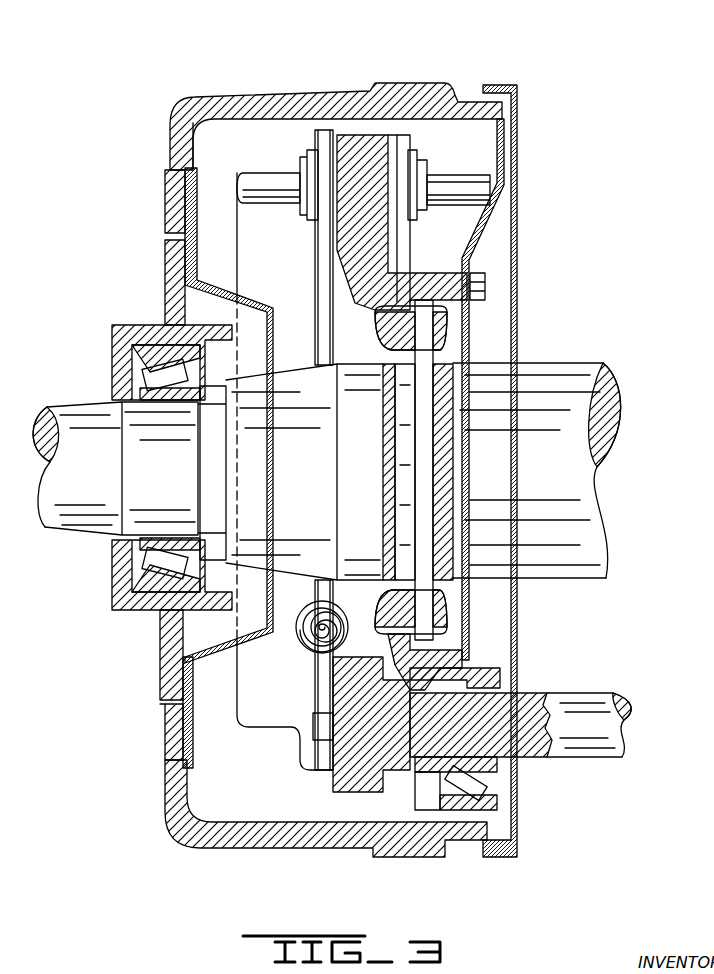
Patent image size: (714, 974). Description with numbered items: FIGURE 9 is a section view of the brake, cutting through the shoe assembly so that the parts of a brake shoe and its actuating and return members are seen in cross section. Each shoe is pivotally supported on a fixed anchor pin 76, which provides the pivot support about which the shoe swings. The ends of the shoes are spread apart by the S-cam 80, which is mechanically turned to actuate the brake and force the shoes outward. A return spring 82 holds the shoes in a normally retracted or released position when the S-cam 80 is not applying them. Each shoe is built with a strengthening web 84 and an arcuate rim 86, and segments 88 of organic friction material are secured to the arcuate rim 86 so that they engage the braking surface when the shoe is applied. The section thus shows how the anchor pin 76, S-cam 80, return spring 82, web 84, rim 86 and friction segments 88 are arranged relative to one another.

The fixed anchor pin 76 is at (430, 165).
The S-cam 80 is at (350, 795).
The return spring 82 is at (303, 647).
The strengthening web 84 is at (323, 300).
The arcuate rim 86 is at (238, 218).
The segments of organic friction material 88 is at (265, 178).